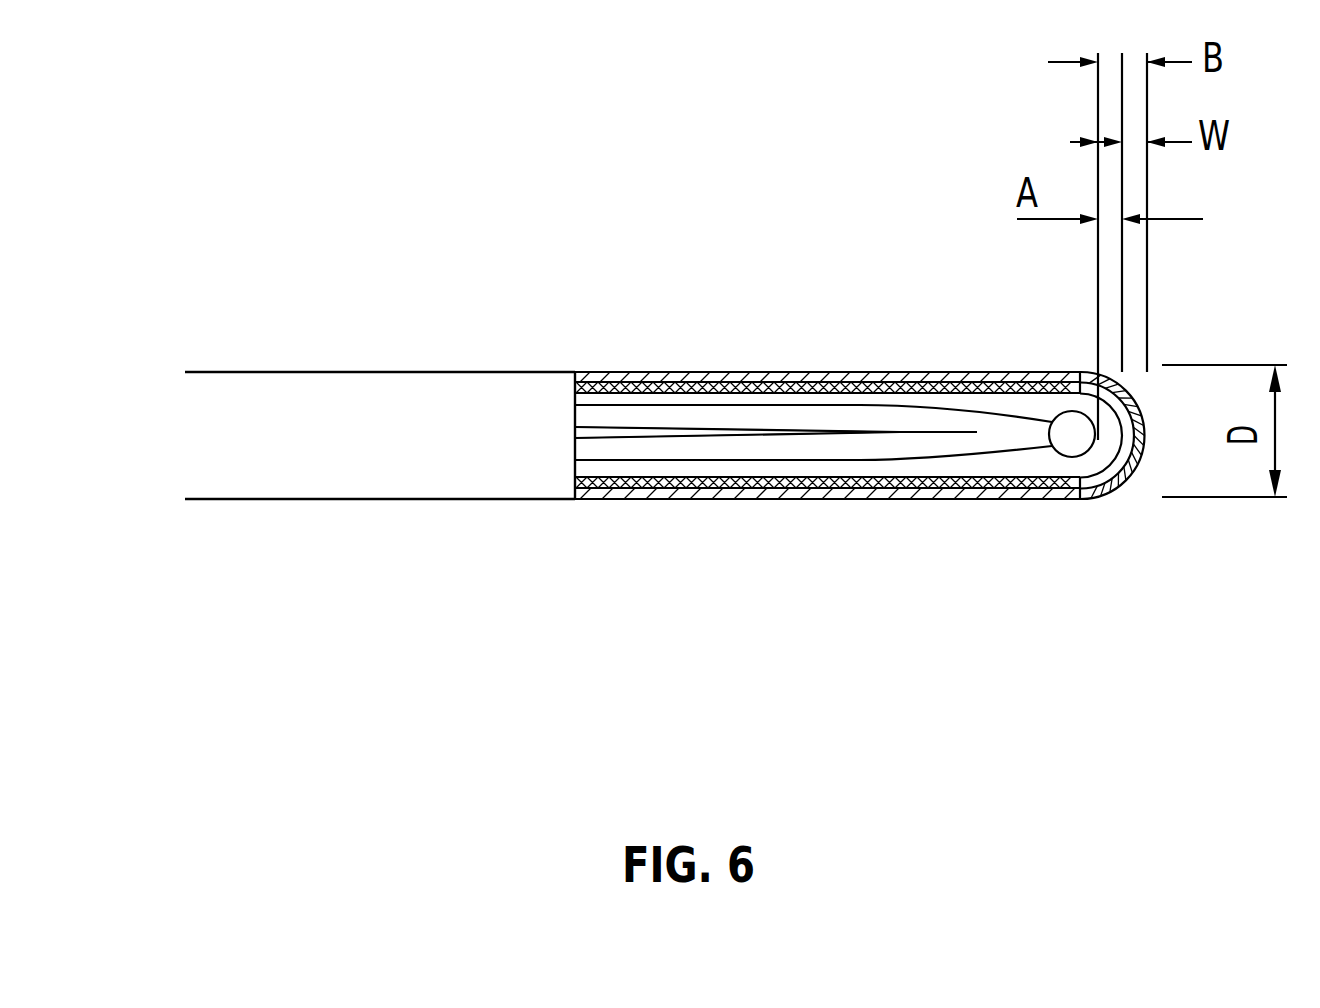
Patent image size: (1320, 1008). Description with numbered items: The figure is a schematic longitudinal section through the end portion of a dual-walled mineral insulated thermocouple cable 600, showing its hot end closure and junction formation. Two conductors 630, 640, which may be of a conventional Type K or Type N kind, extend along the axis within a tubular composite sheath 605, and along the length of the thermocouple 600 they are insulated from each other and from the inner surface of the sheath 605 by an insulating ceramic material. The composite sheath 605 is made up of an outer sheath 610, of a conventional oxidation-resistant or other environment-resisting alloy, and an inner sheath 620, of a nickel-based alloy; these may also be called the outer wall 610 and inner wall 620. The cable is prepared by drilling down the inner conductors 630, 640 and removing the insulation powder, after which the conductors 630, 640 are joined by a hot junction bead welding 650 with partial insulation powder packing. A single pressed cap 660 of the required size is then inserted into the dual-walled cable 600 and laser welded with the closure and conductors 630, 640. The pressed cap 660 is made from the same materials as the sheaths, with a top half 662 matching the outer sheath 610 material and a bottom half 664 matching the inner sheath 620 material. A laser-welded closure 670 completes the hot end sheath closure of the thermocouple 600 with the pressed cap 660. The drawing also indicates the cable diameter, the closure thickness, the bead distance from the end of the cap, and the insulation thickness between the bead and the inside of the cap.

The thermocouple 600 is at (486, 255).
The composite sheath 605 is at (373, 460).
The outer sheath 610 is at (757, 497).
The inner sheath 620 is at (858, 485).
The conductor 630 is at (806, 413).
The conductor 640 is at (705, 456).
The hot junction bead welding 650 is at (1070, 431).
The pressed cap 660 is at (1129, 492).
The top half of the pressed cap 662 is at (1115, 482).
The bottom half of the pressed cap 664 is at (1095, 478).
The laser-welded closure 670 is at (1080, 373).